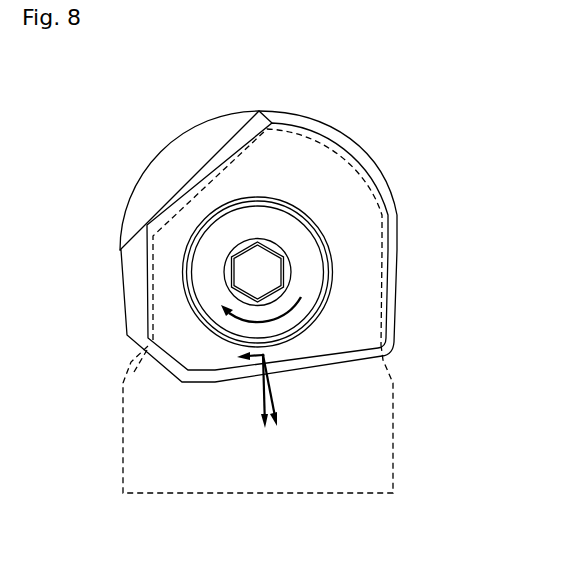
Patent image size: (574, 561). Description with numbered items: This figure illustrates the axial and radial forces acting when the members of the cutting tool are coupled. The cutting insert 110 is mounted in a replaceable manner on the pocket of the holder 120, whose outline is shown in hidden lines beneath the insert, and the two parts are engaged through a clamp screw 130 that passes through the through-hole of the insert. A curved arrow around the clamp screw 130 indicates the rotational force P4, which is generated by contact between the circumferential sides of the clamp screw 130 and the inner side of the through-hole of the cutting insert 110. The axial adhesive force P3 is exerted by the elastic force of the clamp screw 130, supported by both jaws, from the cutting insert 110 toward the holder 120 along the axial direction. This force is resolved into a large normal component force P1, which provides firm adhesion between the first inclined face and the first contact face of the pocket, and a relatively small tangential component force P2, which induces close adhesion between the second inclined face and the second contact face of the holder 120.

The cutting insert 110 is at (131, 124).
The holder 120 is at (373, 455).
The clamp screw 130 is at (295, 237).
The normal component force P1 is at (276, 403).
The tangential component force P2 is at (238, 357).
The axial adhesive force P3 is at (262, 390).
The rotational force P4 is at (264, 354).